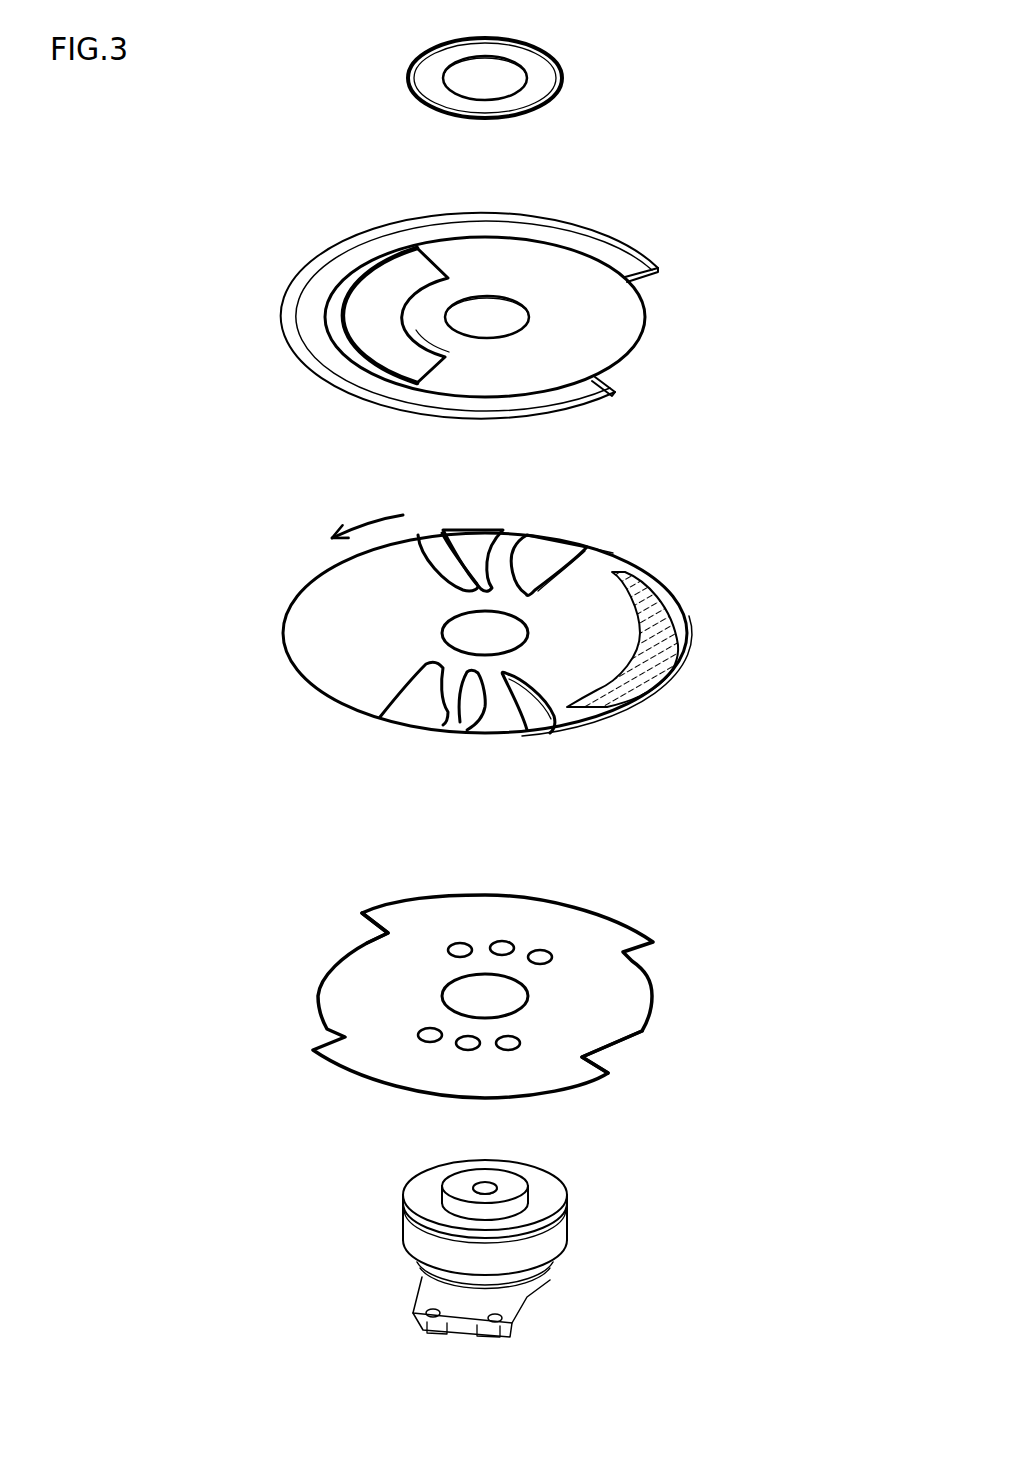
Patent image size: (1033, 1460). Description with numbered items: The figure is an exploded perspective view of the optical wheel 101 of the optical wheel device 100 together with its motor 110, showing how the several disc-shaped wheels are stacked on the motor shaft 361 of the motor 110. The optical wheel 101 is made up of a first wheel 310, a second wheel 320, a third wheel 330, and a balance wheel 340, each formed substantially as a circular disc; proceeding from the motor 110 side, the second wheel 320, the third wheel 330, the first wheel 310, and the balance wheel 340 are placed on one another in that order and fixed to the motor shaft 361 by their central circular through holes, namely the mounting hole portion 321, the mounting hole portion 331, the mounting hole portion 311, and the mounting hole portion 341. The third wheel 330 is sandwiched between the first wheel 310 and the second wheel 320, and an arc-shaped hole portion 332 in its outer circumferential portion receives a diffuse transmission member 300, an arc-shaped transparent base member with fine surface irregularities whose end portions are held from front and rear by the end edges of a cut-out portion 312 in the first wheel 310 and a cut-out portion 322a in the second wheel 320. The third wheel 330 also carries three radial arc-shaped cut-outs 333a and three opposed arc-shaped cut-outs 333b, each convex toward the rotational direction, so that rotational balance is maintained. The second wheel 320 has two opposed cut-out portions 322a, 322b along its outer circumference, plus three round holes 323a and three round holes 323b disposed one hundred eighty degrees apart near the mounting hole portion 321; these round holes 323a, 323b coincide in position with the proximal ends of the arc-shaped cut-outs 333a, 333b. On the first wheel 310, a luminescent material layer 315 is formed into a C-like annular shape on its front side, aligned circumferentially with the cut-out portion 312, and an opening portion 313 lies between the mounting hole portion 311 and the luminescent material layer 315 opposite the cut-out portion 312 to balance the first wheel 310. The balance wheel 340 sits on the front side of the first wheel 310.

The optical wheel device 100 is at (808, 155).
The optical wheel 101 is at (808, 245).
The motor 110 is at (490, 1259).
The diffuse transmission member 300 is at (466, 670).
The first wheel 310 is at (452, 326).
The mounting hole portion 311 is at (482, 338).
The cut-out portion 312 is at (657, 360).
The opening portion 313 is at (353, 317).
The luminescent material layer 315 is at (550, 233).
The second wheel 320 is at (466, 994).
The mounting hole portion 321 is at (443, 990).
The cut-out portion 322a is at (667, 1040).
The cut-out portion 322b is at (303, 990).
The round holes 323a is at (428, 1042).
The round holes 323b is at (542, 950).
The third wheel 330 is at (466, 670).
The mounting hole portion 331 is at (442, 625).
The hole portion 332 is at (683, 642).
The arc-shaped cut-outs 333a is at (462, 720).
The arc-shaped cut-outs 333b is at (637, 523).
The balance wheel 340 is at (486, 80).
The mounting hole portion 341 is at (445, 85).
The motor shaft 361 is at (527, 1198).